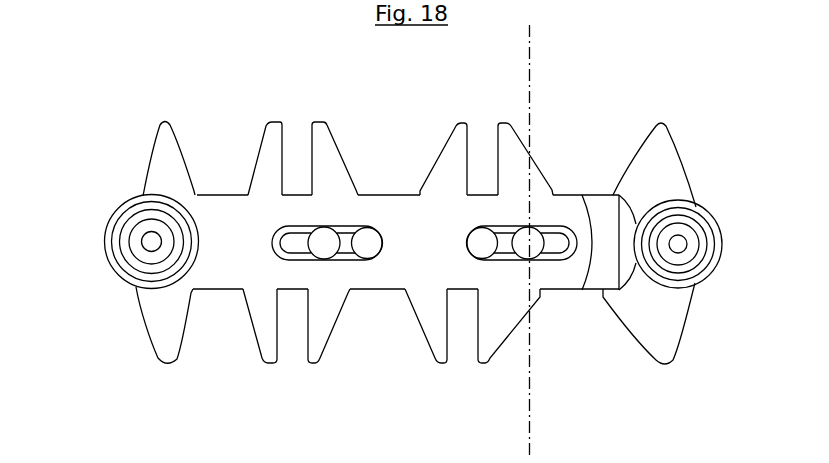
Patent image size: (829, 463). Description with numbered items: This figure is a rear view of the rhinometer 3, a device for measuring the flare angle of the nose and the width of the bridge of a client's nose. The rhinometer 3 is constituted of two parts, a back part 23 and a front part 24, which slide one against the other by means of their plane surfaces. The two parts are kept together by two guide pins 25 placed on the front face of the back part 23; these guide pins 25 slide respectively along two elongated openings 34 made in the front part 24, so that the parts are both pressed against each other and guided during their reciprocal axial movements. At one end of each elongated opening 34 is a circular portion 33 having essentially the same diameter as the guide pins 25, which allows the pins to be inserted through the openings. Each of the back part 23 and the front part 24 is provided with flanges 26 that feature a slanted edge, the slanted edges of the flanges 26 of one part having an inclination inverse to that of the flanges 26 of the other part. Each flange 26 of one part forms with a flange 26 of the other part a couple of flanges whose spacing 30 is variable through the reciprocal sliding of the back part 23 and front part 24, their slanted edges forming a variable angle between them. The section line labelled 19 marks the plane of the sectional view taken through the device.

The rhinometer 3 is at (136, 125).
The section line 19- 19 is at (518, 39).
The back part 23 is at (713, 225).
The front part 24 is at (125, 232).
The guide pins 25 is at (324, 243).
The flanges 26 is at (177, 160).
The spacing 30 is at (372, 180).
The circular portion 33 is at (483, 243).
The elongated openings 34 is at (293, 242).